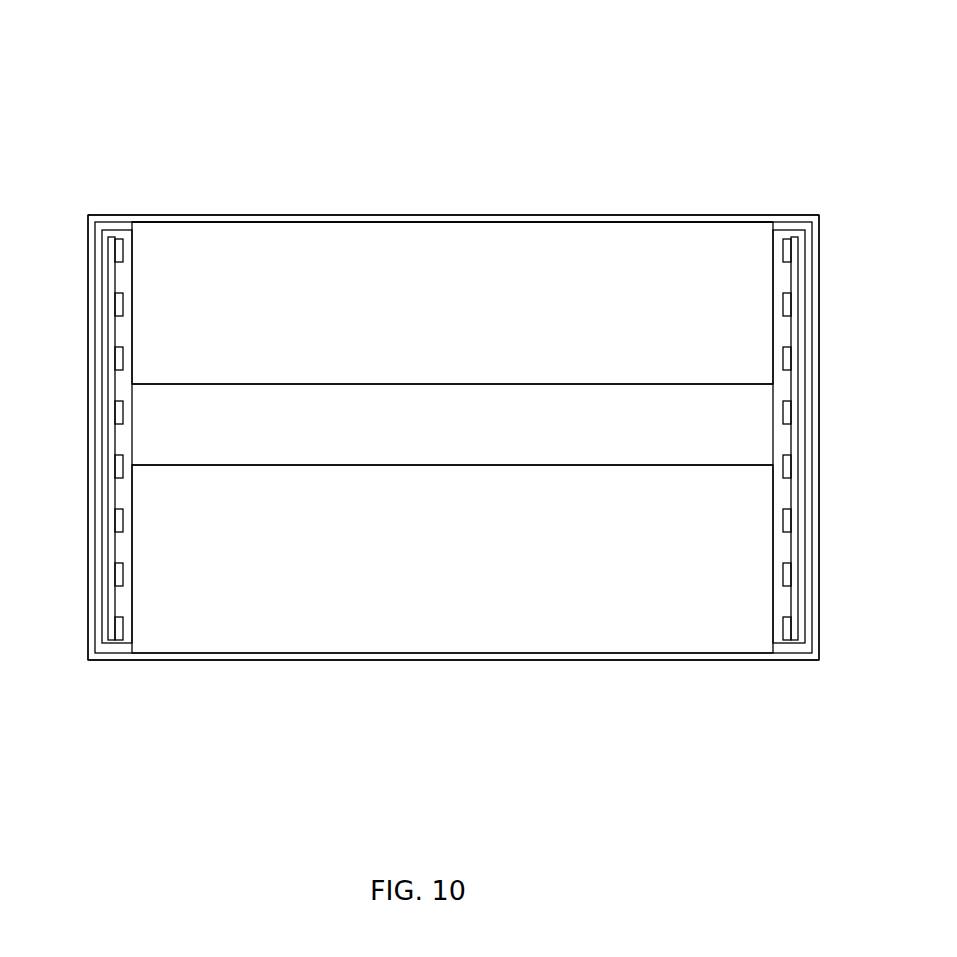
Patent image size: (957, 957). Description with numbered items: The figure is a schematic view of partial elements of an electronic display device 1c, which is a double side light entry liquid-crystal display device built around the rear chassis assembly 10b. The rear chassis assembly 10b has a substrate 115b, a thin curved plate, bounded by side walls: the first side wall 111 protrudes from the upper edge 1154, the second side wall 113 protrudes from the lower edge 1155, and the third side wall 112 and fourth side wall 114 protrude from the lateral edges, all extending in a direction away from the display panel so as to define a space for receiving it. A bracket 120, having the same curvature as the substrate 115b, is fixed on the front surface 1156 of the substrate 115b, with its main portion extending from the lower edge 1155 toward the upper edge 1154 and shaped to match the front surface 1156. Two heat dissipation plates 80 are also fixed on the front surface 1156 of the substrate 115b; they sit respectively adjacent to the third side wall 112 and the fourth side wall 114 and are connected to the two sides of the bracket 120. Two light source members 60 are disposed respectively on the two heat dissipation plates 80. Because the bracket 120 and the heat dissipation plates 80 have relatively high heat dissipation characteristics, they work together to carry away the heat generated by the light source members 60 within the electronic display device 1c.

The electronic display device 1c is at (125, 105).
The rear chassis assembly 10b is at (726, 198).
The first side wall 111 is at (359, 214).
The second side wall 113 is at (455, 662).
The fourth side wall 114 is at (88, 615).
The third side wall 112 is at (819, 615).
The heat dissipation plate 80 is at (127, 229).
The light source member 60 is at (120, 329).
The upper edge 1154 is at (455, 228).
The lower edge 1155 is at (638, 653).
The front surface 1156 is at (587, 237).
The substrate 115b is at (681, 267).
The bracket 120 is at (720, 590).